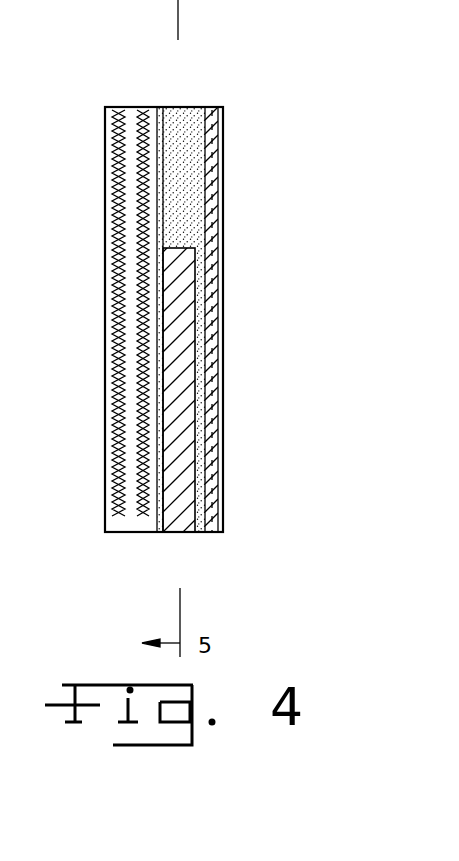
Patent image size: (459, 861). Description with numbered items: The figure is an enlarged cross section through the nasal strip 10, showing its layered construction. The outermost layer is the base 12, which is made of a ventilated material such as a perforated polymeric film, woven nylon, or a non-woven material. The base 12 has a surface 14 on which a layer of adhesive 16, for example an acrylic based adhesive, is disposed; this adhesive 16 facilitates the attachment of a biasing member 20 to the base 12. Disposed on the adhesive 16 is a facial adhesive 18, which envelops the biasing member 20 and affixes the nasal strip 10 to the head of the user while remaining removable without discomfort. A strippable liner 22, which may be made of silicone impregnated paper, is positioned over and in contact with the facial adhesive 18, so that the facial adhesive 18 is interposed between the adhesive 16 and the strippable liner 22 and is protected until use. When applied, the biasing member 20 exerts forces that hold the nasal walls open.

The nasal strip 10 is at (278, 124).
The base 12 is at (123, 120).
The surface 14 is at (159, 103).
The adhesive 16 is at (161, 533).
The facial adhesive 18 is at (186, 112).
The biasing member 20 is at (185, 395).
The strippable liner 22 is at (217, 533).